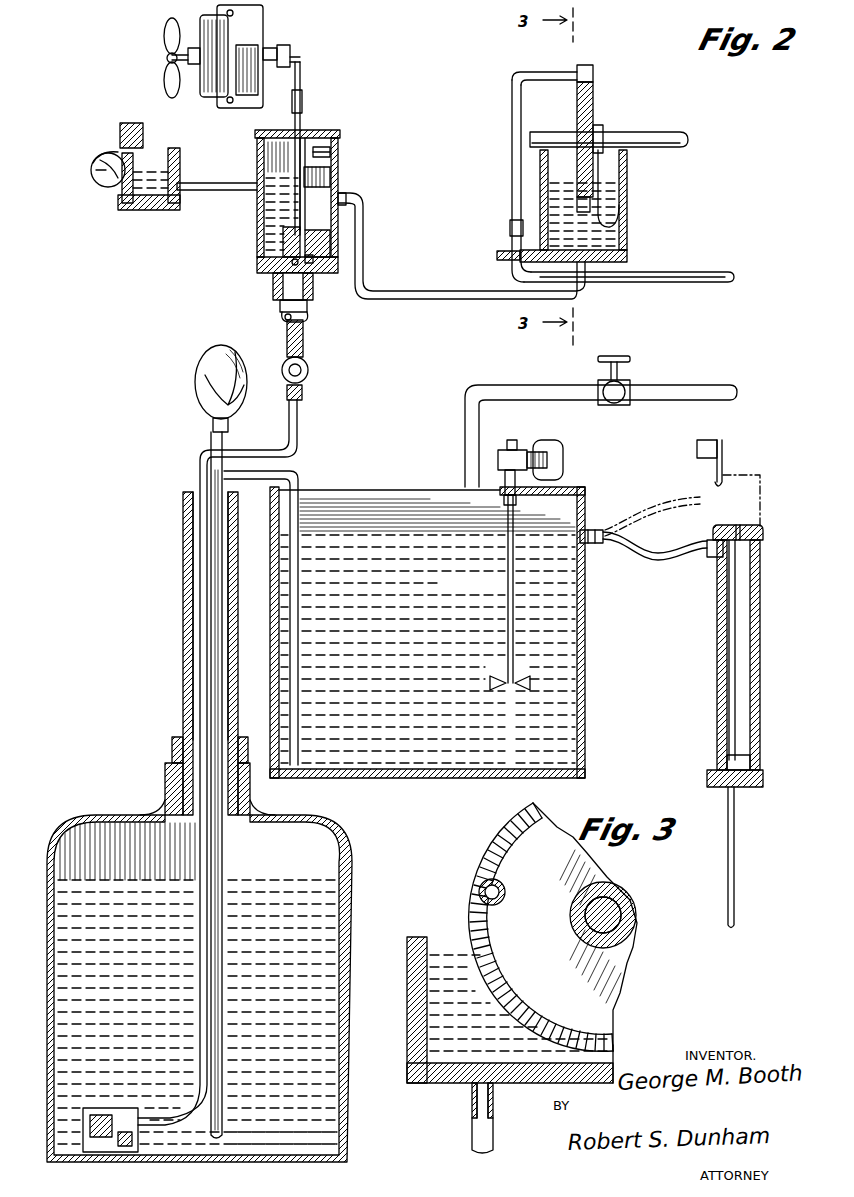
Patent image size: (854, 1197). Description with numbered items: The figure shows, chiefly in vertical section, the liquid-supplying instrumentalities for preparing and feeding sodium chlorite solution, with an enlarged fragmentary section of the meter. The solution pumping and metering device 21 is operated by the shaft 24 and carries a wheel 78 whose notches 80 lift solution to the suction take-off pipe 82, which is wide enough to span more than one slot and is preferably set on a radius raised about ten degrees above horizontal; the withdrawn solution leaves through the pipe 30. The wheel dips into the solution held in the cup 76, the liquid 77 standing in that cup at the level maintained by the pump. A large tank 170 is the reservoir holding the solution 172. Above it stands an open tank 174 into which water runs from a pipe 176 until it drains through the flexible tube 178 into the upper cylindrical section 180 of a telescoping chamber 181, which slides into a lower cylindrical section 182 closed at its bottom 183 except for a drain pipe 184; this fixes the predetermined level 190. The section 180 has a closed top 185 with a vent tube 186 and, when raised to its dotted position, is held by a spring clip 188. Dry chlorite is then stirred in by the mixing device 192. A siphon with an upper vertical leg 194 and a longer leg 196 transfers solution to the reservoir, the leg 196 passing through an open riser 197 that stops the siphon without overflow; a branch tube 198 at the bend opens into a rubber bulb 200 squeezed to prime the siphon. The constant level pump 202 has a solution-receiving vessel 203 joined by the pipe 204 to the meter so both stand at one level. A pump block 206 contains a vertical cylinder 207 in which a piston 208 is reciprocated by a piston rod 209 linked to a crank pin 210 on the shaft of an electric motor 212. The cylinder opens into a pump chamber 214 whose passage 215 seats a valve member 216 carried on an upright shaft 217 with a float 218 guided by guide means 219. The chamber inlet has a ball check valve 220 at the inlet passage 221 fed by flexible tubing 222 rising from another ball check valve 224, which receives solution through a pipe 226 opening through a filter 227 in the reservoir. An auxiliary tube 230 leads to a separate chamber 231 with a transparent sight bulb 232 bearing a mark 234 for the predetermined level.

In FIG. 2, the solution pumping and metering device 21 is at (531, 62).
In FIG. 3, the solution pumping and metering device 21 is at (657, 906).
In FIG. 2, the shaft 24 is at (668, 135).
In FIG. 2, the pipe 30 is at (675, 285).
In FIG. 2, the reservoir cup 76 is at (628, 190).
In FIG. 3, the reservoir cup 76 is at (403, 947).
In FIG. 2, the liquid in reservoir 77 is at (627, 226).
In FIG. 3, the liquid in reservoir 77 is at (433, 965).
In FIG. 2, the wheel 78 is at (597, 95).
In FIG. 3, the wheel 78 is at (615, 980).
In FIG. 2, the notches 80 is at (595, 72).
In FIG. 3, the notches 80 is at (600, 1028).
In FIG. 2, the suction take-off pipe 82 is at (540, 82).
In FIG. 3, the suction take-off pipe 82 is at (506, 888).
In FIG. 2, the tank 170 is at (95, 812).
In FIG. 2, the solution of sodium chlorite 172 is at (330, 896).
In FIG. 2, the open tank 174 is at (585, 585).
In FIG. 2, the pipe 176 is at (465, 442).
In FIG. 2, the flexible tube 178 is at (604, 548).
In FIG. 2, the upper cylindrical section 180 is at (760, 551).
In FIG. 2, the vertically telescoping chamber 181 is at (761, 612).
In FIG. 2, the lower cylindrical section 182 is at (717, 652).
In FIG. 2, the bottom 183 is at (763, 790).
In FIG. 2, the drain pipe 184 is at (740, 856).
In FIG. 2, the closed top 185 is at (762, 529).
In FIG. 2, the vent tube 186 is at (740, 525).
In FIG. 2, the spring clip 188 is at (705, 462).
In FIG. 2, the predetermined level 190 is at (560, 515).
In FIG. 2, the mixing device 192 is at (508, 622).
In FIG. 2, the upper vertical leg 194 is at (290, 650).
In FIG. 2, the longer vertical leg 196 is at (213, 668).
In FIG. 2, the open riser 197 is at (180, 555).
In FIG. 2, the branch tube 198 is at (215, 445).
In FIG. 2, the rubber bulb 200 is at (212, 366).
In FIG. 2, the constant level pump 202 is at (340, 133).
In FIG. 2, the solution-receiving vessel 203 is at (257, 222).
In FIG. 2, the pipe 204 is at (367, 276).
In FIG. 3, the pipe 204 is at (470, 1125).
In FIG. 2, the pump block 206 is at (257, 268).
In FIG. 2, the vertical cylinder 207 is at (283, 238).
In FIG. 2, the piston 208 is at (330, 240).
In FIG. 2, the piston rod 209 is at (303, 118).
In FIG. 2, the crank pin 210 is at (304, 72).
In FIG. 2, the electric motor 212 is at (208, 93).
In FIG. 2, the pump chamber 214 is at (278, 283).
In FIG. 2, the passage 215 is at (312, 262).
In FIG. 2, the valve member 216 is at (345, 210).
In FIG. 2, the upright supporting shaft 217 is at (325, 187).
In FIG. 2, the float 218 is at (328, 170).
In FIG. 2, the guide means 219 is at (328, 150).
In FIG. 2, the ball check valve 220 is at (280, 303).
In FIG. 2, the inlet passage 221 is at (283, 318).
In FIG. 2, the flexible tubing 222 is at (288, 343).
In FIG. 2, the ball check valve 224 is at (286, 371).
In FIG. 2, the pipe 226 is at (188, 595).
In FIG. 2, the filter 227 is at (100, 1110).
In FIG. 2, the auxiliary tube 230 is at (187, 198).
In FIG. 2, the separate chamber 231 is at (181, 160).
In FIG. 2, the transparent sight bulb 232 is at (94, 176).
In FIG. 2, the mark 234 is at (101, 155).